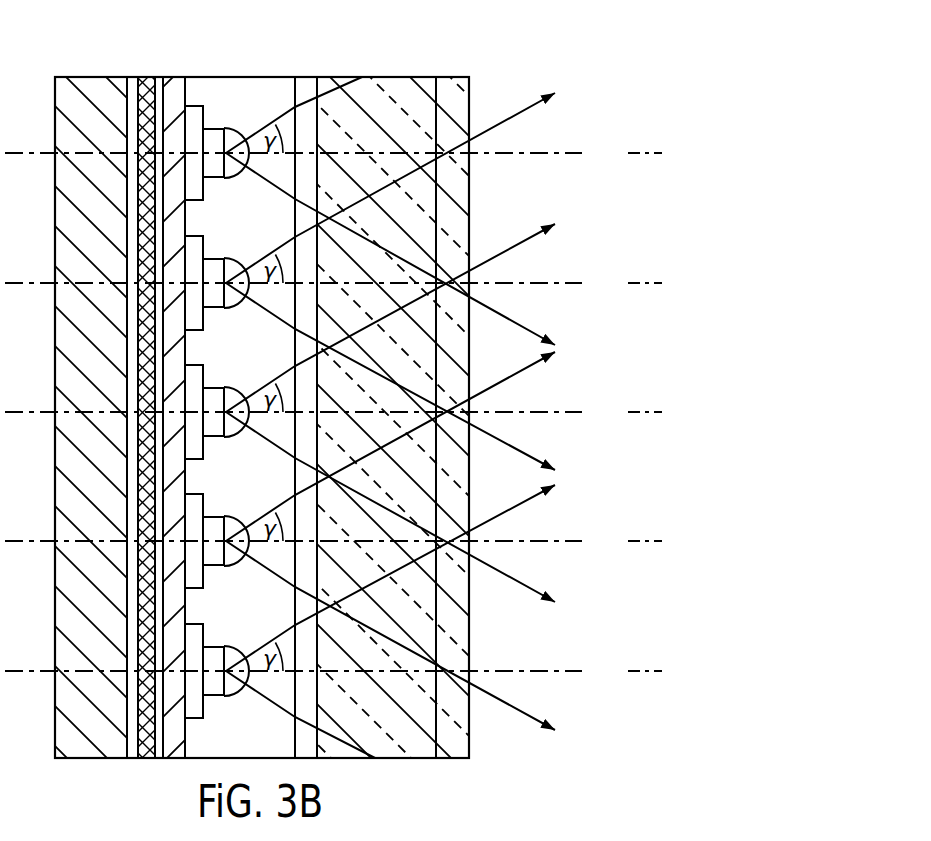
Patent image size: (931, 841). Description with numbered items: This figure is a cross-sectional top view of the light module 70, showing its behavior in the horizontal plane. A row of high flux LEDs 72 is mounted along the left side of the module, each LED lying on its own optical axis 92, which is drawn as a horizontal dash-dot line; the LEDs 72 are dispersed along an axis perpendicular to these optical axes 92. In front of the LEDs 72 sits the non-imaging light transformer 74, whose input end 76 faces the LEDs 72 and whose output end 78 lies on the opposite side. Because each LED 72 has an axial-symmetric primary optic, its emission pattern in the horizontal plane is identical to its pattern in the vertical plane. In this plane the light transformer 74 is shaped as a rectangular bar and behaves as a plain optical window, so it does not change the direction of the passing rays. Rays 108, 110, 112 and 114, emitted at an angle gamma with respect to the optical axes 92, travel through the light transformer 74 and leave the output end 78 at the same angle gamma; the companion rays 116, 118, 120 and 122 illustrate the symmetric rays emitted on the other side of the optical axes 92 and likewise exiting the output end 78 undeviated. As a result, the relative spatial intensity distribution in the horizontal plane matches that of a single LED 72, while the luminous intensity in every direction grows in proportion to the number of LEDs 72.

The light module 70 is at (222, 77).
The high flux LEDs 72 is at (232, 166).
The non-imaging light transformer 74 is at (388, 120).
The input end 76 is at (295, 110).
The output end 78 is at (470, 108).
The LED optical axes 92 is at (333, 412).
The ray 108 is at (409, 180).
The ray 110 is at (409, 310).
The ray 112 is at (409, 446).
The ray 114 is at (409, 577).
The light ray 116 is at (409, 249).
The light ray 118 is at (409, 380).
The light ray 120 is at (409, 517).
The light ray 122 is at (409, 647).